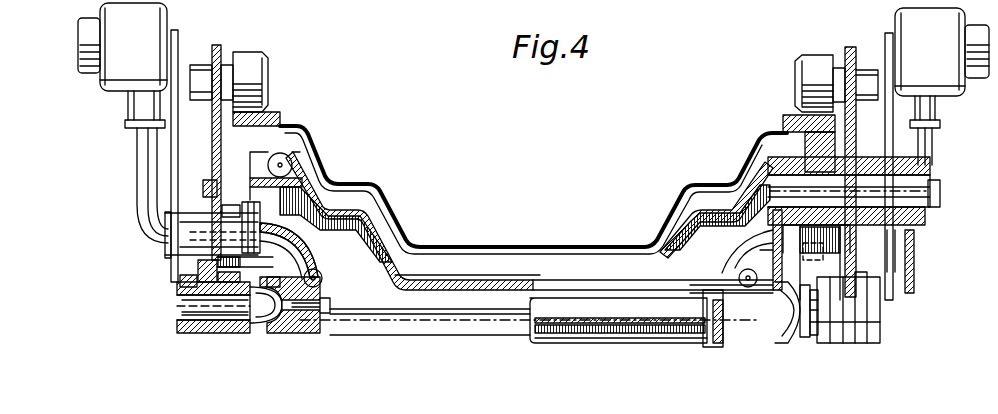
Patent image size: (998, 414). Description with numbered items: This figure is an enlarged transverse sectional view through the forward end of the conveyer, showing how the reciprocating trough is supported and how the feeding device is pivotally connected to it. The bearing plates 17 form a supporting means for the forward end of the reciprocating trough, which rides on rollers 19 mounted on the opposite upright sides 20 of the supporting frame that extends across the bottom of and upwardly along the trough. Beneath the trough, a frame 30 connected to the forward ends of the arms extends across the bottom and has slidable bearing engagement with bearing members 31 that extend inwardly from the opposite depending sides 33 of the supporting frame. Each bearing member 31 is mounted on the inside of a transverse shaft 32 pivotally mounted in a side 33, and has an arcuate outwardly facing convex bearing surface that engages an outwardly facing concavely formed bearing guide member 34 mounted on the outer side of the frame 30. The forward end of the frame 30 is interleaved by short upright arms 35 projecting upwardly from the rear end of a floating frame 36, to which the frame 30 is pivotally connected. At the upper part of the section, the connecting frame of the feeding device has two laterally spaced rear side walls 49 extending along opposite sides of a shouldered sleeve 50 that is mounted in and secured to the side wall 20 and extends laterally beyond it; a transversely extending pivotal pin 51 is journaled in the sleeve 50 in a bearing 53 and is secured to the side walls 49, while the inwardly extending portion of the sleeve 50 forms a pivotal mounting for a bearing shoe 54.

The bearing plate 17 is at (281, 118).
The roller 19 is at (270, 65).
The upright side 20 is at (212, 56).
The frame 30 is at (414, 336).
The bearing member 31 is at (298, 334).
The transverse shaft 32 is at (182, 296).
The depending side 33 is at (212, 333).
The bearing guide member 34 is at (268, 323).
The upright arm 35 is at (161, 121).
The floating frame 36 is at (532, 341).
The rear side wall 49 is at (740, 270).
The shouldered sleeve 50 is at (808, 150).
The pivotal pin 51 is at (920, 182).
The bearing 53 is at (775, 166).
The bearing shoe 54 is at (785, 128).